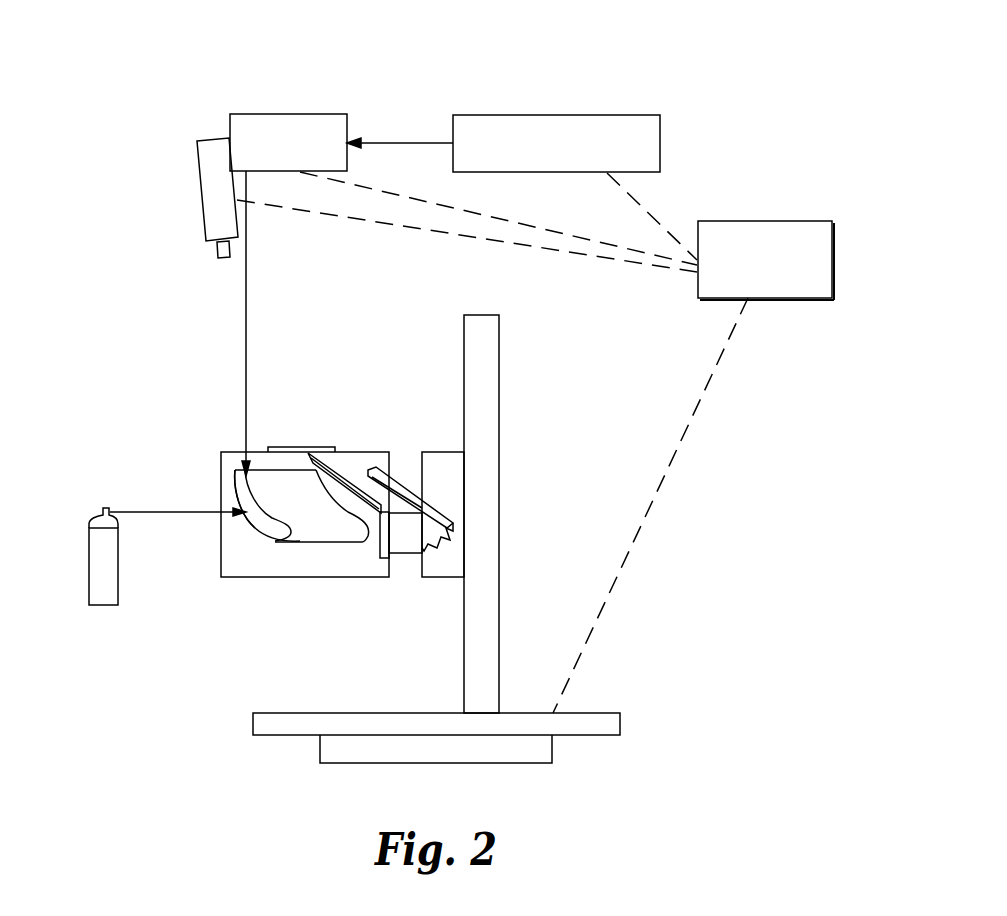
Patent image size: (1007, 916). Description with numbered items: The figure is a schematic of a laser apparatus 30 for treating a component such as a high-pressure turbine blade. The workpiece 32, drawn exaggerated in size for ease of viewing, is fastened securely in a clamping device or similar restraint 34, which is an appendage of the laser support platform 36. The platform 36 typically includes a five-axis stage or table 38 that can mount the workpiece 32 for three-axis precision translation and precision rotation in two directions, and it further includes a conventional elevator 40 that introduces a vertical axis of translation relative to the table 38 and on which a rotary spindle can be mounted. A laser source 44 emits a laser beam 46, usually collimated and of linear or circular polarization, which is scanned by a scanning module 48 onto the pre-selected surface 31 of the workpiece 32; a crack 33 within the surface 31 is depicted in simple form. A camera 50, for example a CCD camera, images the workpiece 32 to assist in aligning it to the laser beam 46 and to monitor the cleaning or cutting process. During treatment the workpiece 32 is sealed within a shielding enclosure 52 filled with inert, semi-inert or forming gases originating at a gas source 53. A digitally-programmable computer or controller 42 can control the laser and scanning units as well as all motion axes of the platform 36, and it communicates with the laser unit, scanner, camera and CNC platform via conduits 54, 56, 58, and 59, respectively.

The laser apparatus 30 is at (522, 54).
The pre-selected surface 31 is at (258, 523).
The workpiece 32 is at (370, 547).
The crack 33 is at (238, 499).
The restraint 34 is at (440, 465).
The laser support platform 36 is at (626, 670).
The five-axis stage or table 38 is at (610, 724).
The elevator 40 is at (490, 627).
The computer or controller 42 is at (760, 299).
The laser source 44 is at (648, 142).
The laser beam 46 is at (381, 142).
The scanning module 48 is at (235, 121).
The camera 50 is at (210, 210).
The shielding enclosure 52 is at (236, 571).
The gas source 53 is at (89, 575).
The conduit 54 is at (677, 216).
The conduit 56 is at (498, 218).
The conduit 58 is at (467, 236).
The conduit 59 is at (650, 505).